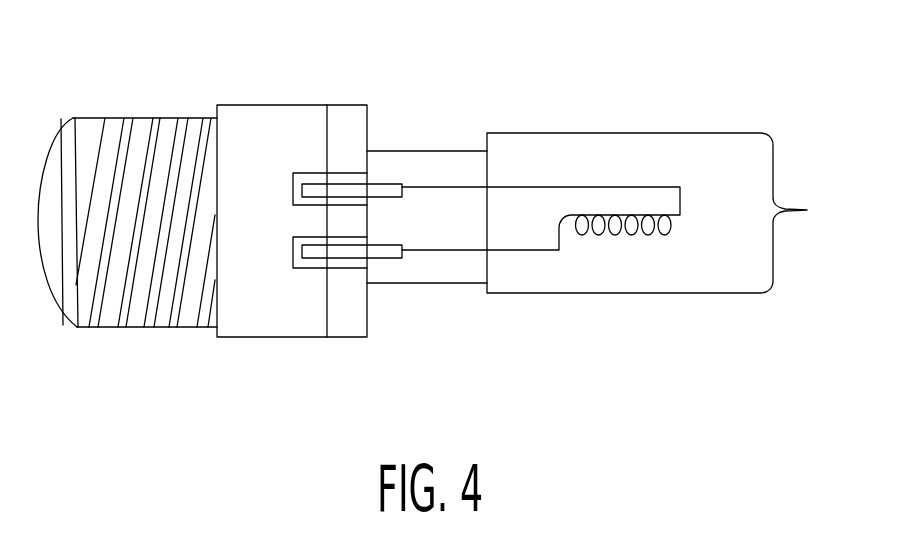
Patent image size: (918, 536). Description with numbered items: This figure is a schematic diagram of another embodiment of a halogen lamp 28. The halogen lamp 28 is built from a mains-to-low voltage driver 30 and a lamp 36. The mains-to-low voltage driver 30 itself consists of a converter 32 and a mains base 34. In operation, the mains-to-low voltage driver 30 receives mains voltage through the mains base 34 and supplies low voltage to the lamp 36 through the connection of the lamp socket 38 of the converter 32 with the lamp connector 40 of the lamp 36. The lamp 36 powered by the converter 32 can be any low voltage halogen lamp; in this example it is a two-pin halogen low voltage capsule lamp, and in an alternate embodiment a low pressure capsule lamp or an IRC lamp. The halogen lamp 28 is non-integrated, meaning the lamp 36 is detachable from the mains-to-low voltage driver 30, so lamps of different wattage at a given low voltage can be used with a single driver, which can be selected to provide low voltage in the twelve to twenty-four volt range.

The halogen lamp 28 is at (528, 31).
The mains-to-low voltage driver 30 is at (238, 94).
The converter 32 is at (243, 327).
The mains base 34 is at (107, 327).
The lamp 36 is at (597, 150).
The lamp socket 38 is at (298, 268).
The lamp connector 40 is at (385, 188).